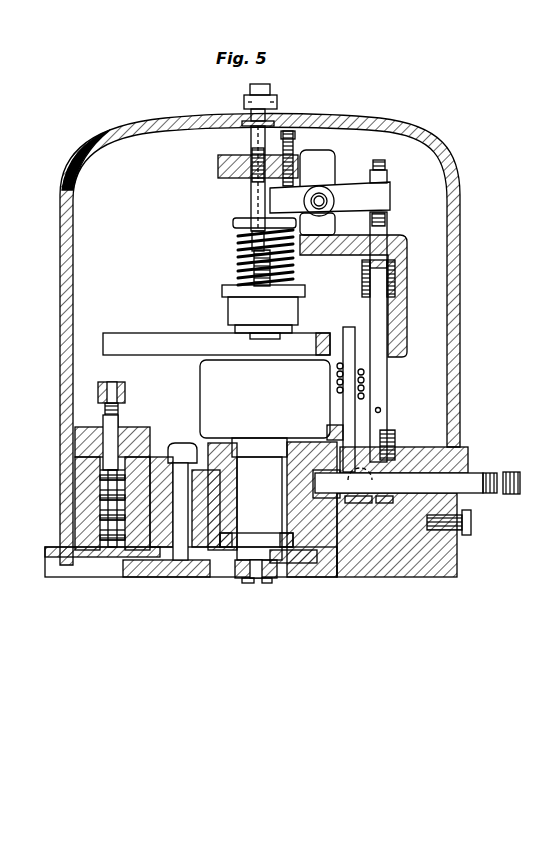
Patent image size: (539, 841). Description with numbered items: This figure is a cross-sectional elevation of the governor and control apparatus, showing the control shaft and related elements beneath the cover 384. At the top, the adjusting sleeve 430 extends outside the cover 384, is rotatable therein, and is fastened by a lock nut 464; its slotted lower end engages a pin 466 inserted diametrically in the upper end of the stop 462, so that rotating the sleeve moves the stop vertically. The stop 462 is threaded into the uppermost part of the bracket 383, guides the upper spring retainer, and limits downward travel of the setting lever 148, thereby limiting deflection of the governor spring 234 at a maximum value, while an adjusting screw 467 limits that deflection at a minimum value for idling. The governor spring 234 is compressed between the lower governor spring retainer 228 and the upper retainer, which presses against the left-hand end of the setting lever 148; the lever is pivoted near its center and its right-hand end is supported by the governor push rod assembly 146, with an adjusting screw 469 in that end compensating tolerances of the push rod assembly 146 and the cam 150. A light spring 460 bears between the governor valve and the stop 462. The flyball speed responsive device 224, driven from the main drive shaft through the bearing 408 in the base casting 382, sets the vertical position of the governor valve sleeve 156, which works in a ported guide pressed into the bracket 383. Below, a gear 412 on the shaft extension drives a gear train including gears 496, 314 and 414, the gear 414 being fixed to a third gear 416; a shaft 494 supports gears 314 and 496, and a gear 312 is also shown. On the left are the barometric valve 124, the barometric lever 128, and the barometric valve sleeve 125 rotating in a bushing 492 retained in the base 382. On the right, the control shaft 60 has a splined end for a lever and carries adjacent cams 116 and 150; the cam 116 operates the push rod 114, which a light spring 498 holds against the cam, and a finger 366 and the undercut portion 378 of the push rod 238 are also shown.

The cover 384 is at (458, 187).
The lock nut 464 is at (276, 97).
The adjusting sleeve 430 is at (250, 140).
The pin 466 is at (218, 153).
The adjusting screw 467 is at (294, 137).
The setting lever 148 is at (367, 209).
The adjusting screw 469 is at (386, 168).
The push rod 114 is at (353, 328).
The stop 462 is at (236, 234).
The governor spring 234 is at (235, 258).
The light spring 460 is at (236, 281).
The lower governor spring retainer 228 is at (281, 308).
The governor push rod assembly 146 is at (337, 294).
The bracket 383 is at (190, 353).
The governor valve sleeve 156 is at (290, 340).
The flyball speed responsive device 224 is at (281, 414).
The light spring 498 is at (337, 378).
The bearing 408 is at (275, 505).
The barometric lever 128 is at (126, 392).
The barometric valve 124 is at (104, 422).
The barometric valve sleeve 125 is at (96, 512).
The bushing 492 is at (72, 547).
The shaft 494 is at (180, 443).
The gear 312 is at (80, 549).
The gear 314 is at (180, 562).
The gear 496 is at (218, 560).
The gear 412 is at (256, 584).
The third gear 416 is at (288, 566).
The gear 414 is at (306, 564).
The base casting 382 is at (472, 617).
The control shaft 60 is at (416, 483).
The cam 116 is at (350, 504).
The cam 150 is at (374, 504).
The push rod 238 is at (399, 387).
The finger 366 is at (380, 412).
The undercut portion 378 is at (386, 440).